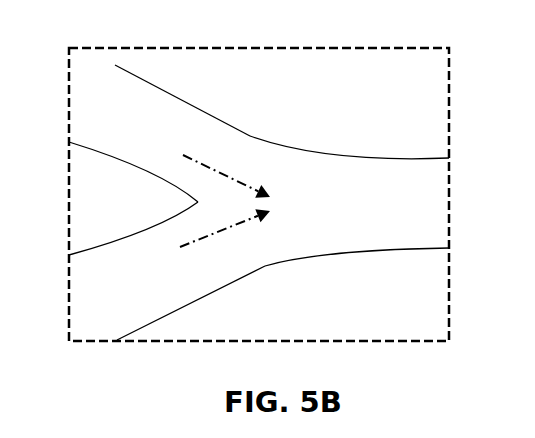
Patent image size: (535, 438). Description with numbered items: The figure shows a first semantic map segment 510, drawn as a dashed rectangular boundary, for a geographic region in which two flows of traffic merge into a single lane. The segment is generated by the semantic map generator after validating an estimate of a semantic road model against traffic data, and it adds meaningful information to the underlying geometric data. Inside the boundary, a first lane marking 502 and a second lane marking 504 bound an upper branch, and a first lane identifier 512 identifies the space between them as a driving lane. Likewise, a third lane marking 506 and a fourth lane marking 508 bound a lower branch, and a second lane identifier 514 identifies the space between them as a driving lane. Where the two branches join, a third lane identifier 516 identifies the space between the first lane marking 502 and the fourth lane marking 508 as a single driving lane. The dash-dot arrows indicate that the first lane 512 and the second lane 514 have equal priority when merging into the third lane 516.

The first lane marking 502 is at (317, 153).
The second lane marking 504 is at (155, 173).
The third lane marking 506 is at (142, 230).
The fourth lane marking 508 is at (338, 251).
The first semantic map segment 510 is at (377, 48).
The first lane identifier 512 is at (109, 132).
The second lane identifier 514 is at (124, 286).
The third lane identifier 516 is at (288, 211).